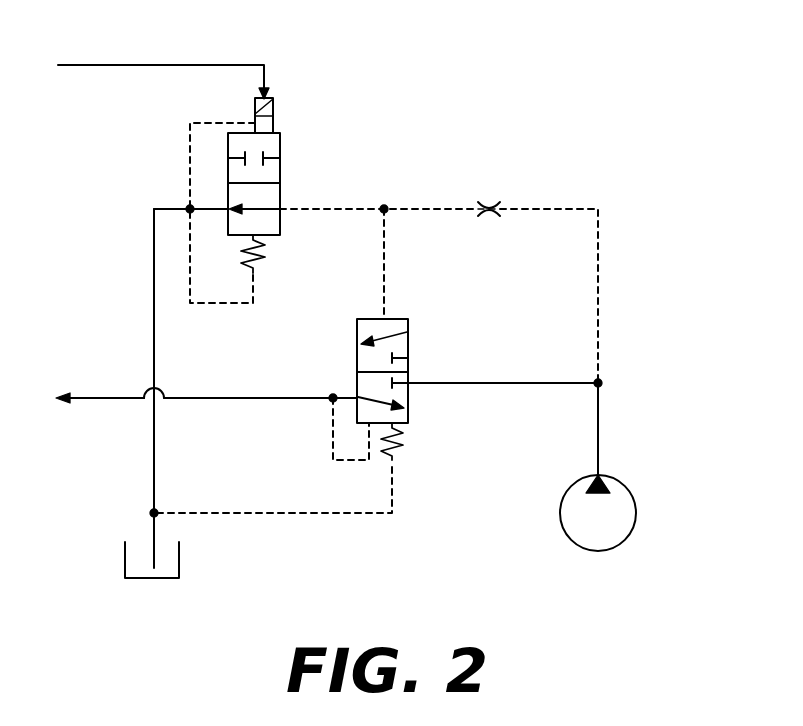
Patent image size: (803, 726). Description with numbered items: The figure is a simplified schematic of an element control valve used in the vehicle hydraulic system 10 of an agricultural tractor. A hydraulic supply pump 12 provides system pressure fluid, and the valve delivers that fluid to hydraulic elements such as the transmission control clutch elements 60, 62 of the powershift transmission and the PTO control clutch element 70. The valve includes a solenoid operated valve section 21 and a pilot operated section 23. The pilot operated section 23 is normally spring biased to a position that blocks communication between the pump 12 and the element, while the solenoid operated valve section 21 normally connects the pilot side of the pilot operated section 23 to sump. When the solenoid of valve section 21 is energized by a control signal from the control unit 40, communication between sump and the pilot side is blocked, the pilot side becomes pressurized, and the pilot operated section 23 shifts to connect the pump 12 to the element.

The vehicle hydraulic system 10 is at (672, 128).
The hydraulic supply pump 12 is at (613, 475).
The solenoid operated valve section 21 is at (280, 131).
The pilot operated section 23 is at (405, 318).
The control unit 40 is at (163, 68).
The transmission control clutch element 60 is at (86, 380).
The transmission control clutch element 62 is at (79, 421).
The PTO control clutch element 70 is at (118, 421).